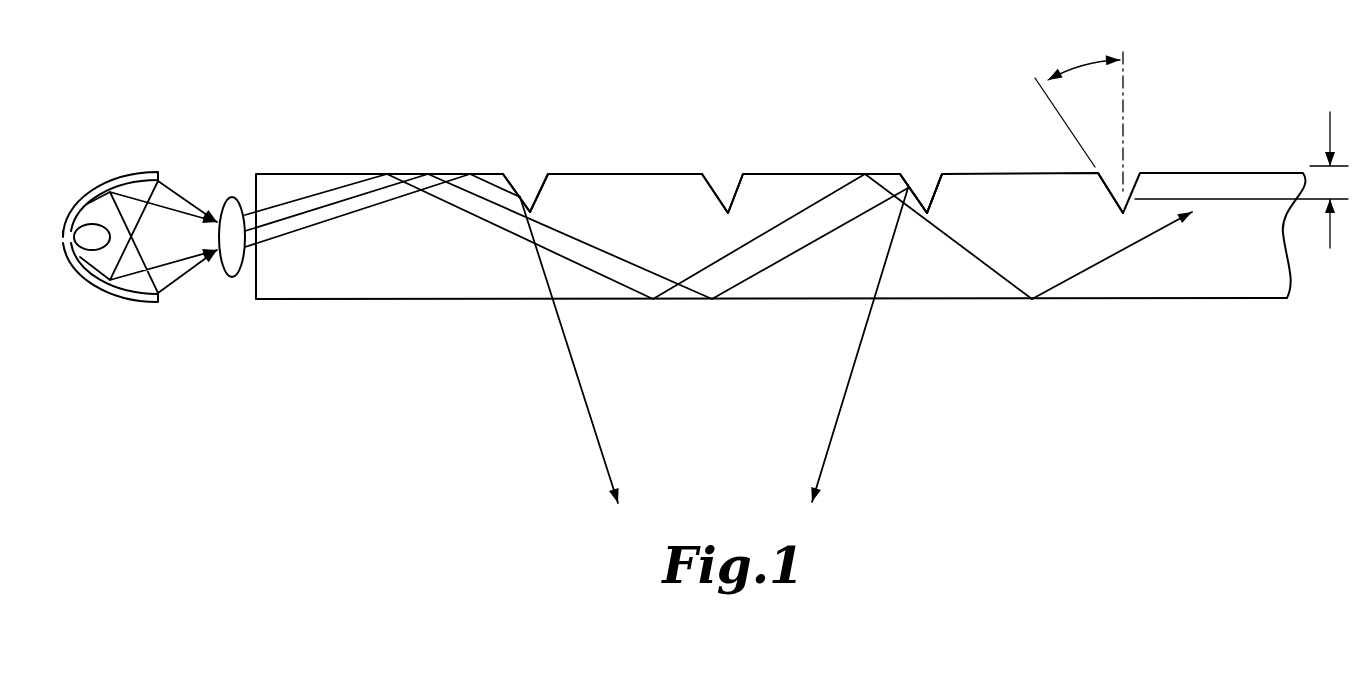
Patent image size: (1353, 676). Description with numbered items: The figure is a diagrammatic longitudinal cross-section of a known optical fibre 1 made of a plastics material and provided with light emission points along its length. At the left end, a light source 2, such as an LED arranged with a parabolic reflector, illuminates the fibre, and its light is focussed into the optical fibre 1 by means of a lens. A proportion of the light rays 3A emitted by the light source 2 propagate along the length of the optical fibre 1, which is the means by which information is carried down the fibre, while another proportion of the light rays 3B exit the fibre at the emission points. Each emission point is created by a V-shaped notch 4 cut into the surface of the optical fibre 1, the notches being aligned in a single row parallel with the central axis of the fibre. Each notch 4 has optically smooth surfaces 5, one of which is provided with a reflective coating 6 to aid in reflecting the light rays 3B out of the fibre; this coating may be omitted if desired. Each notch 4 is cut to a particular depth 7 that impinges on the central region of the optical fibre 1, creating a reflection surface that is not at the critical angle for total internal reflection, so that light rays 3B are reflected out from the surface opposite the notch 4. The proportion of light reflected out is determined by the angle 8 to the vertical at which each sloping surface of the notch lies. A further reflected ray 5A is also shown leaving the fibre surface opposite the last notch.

The optical fibre 1 is at (420, 318).
The light source 2 is at (110, 313).
The light rays 3A is at (183, 192).
The light rays 3B is at (572, 360).
The V-shaped notch 4 is at (513, 183).
The optically smooth surfaces 5 is at (507, 188).
The reflected light beam 5A is at (1093, 265).
The reflective coating 6 is at (921, 192).
The depth 7 is at (1241, 180).
The angle 8 is at (1080, 67).